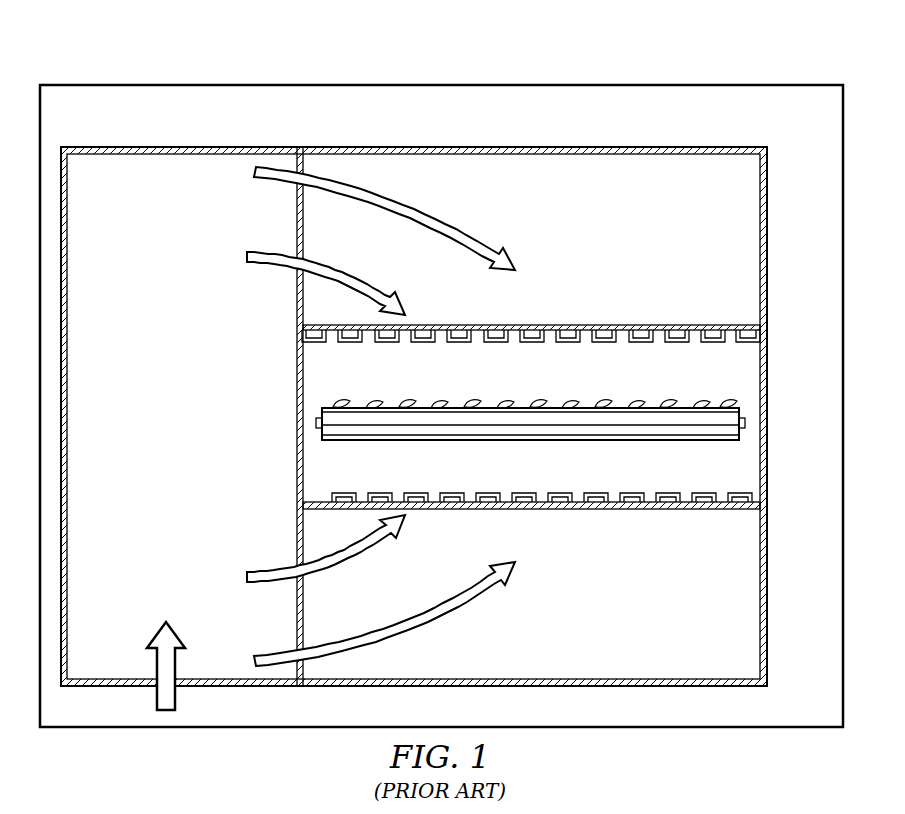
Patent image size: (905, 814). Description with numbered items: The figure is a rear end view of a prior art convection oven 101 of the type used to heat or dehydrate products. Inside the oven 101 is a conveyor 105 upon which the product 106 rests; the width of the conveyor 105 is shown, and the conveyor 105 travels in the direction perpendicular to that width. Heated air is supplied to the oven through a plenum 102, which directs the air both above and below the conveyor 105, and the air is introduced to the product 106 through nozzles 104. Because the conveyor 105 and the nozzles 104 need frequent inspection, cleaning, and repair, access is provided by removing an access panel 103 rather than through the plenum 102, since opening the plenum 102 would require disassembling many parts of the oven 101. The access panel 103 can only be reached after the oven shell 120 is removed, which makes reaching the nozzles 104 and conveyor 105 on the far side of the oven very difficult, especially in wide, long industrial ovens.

The convection oven 101 is at (612, 54).
The plenum 102 is at (295, 138).
The access panel 103 is at (766, 390).
The nozzles 104 is at (402, 481).
The conveyor 105 is at (583, 441).
The product 106 is at (454, 400).
The oven shell 120 is at (717, 85).